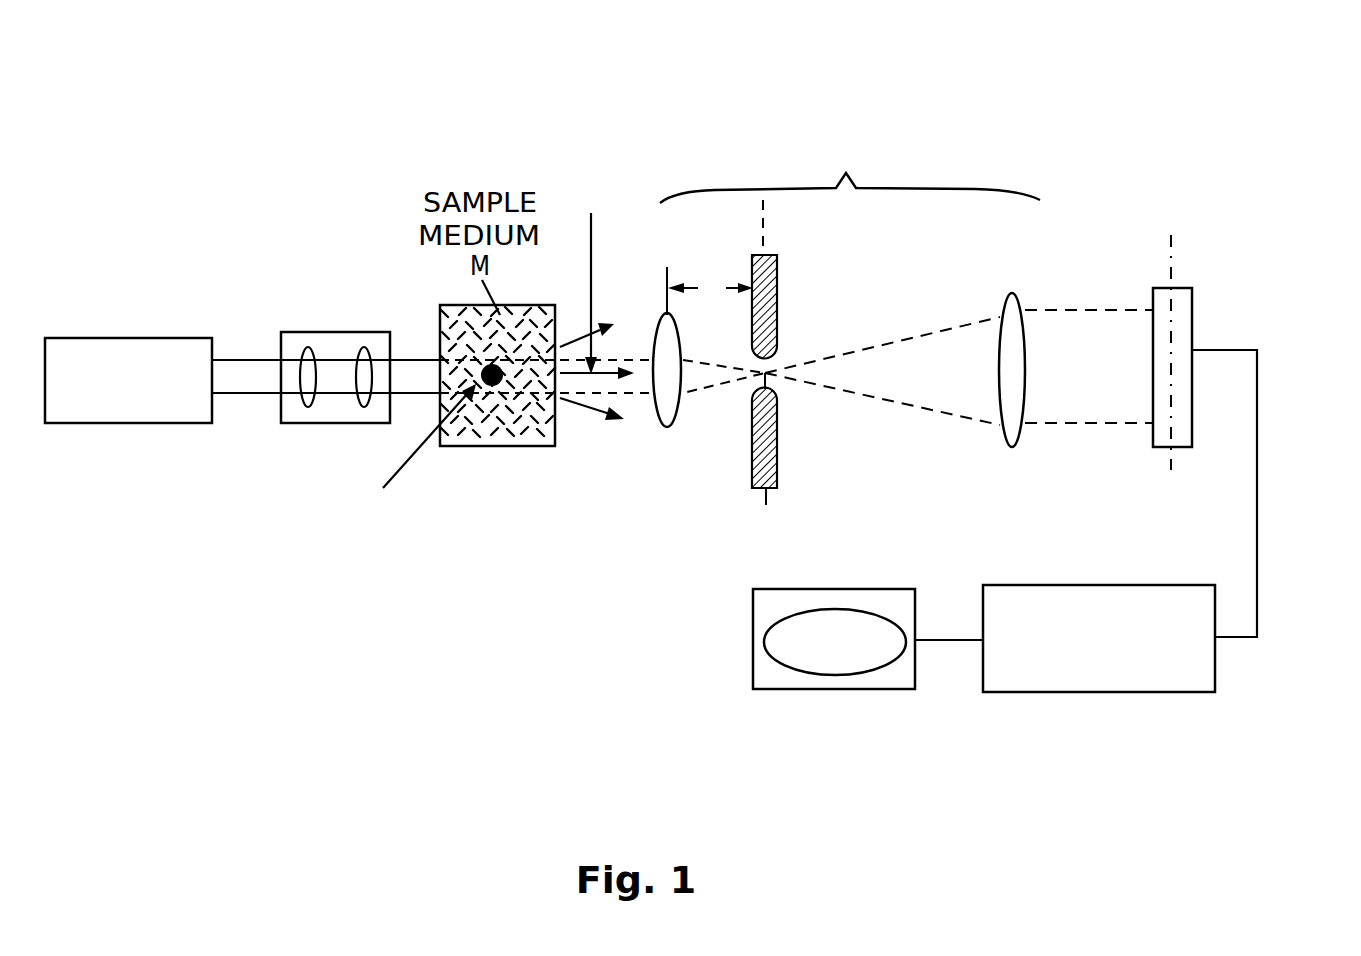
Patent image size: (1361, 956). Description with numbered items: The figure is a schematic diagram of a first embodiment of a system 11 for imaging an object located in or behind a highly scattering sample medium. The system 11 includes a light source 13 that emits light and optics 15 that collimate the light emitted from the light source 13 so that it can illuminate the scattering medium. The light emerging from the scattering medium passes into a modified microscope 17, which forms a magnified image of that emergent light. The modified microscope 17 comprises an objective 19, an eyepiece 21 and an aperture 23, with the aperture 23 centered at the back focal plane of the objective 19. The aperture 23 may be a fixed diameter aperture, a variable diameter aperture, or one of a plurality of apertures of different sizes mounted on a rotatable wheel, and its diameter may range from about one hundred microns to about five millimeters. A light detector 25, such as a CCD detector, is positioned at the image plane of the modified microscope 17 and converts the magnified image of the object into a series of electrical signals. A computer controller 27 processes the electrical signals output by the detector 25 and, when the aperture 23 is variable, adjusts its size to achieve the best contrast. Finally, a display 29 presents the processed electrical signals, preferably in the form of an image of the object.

The system 11 is at (416, 112).
The light source 13 is at (170, 347).
The optics 15 is at (330, 336).
The modified microscope 17 is at (859, 170).
The objective 19 is at (667, 415).
The eyepiece 21 is at (1013, 425).
The aperture 23 is at (775, 307).
The light detector 25 is at (1193, 288).
The computer controller 27 is at (1087, 680).
The display 29 is at (835, 680).